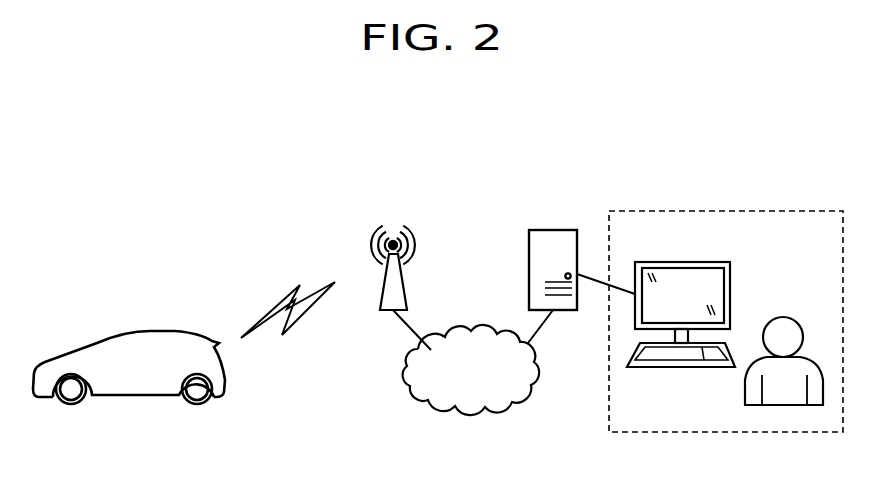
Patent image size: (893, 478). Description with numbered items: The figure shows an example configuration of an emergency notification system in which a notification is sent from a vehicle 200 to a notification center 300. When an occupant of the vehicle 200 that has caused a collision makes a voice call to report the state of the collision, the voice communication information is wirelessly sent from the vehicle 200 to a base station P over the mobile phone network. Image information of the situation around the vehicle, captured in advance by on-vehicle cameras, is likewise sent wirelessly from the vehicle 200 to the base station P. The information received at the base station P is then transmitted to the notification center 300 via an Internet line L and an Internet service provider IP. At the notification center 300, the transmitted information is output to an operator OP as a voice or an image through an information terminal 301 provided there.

The vehicle 200 is at (173, 328).
The base station P is at (403, 289).
The Internet line L is at (515, 398).
The Internet service provider IP is at (550, 229).
The notification center 300 is at (813, 211).
The information terminal 301 is at (731, 282).
The operator OP is at (790, 316).